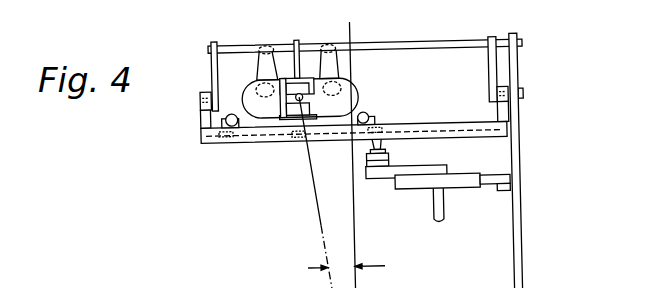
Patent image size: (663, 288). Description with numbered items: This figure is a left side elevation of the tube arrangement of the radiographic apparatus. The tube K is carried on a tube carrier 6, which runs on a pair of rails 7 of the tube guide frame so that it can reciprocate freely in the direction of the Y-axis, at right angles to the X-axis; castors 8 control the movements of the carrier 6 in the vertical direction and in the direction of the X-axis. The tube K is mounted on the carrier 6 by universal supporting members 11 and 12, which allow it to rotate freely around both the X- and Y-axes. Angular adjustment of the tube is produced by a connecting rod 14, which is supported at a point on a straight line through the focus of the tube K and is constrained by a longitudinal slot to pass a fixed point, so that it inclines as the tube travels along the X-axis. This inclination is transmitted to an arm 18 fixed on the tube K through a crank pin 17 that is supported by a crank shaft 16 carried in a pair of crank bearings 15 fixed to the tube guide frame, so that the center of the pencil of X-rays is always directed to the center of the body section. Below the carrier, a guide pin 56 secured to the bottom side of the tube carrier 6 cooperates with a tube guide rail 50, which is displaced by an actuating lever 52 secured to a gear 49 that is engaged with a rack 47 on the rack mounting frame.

The tube carrier 6 is at (250, 125).
The rails 7 is at (431, 125).
The castors 8 is at (234, 140).
The universal supporting member 11 is at (281, 97).
The universal supporting member 12 is at (302, 104).
The connecting rod 14 is at (509, 271).
The crank bearings 15 is at (199, 122).
The crank shaft 16 is at (199, 95).
The crank pin 17 is at (433, 51).
The arm 18 is at (297, 40).
The rack 47 is at (499, 179).
The gear 49 is at (454, 190).
The tube guide rail 50 is at (364, 172).
The actuating lever 52 is at (415, 167).
The guide pin 56 is at (367, 147).
The tube K is at (354, 82).